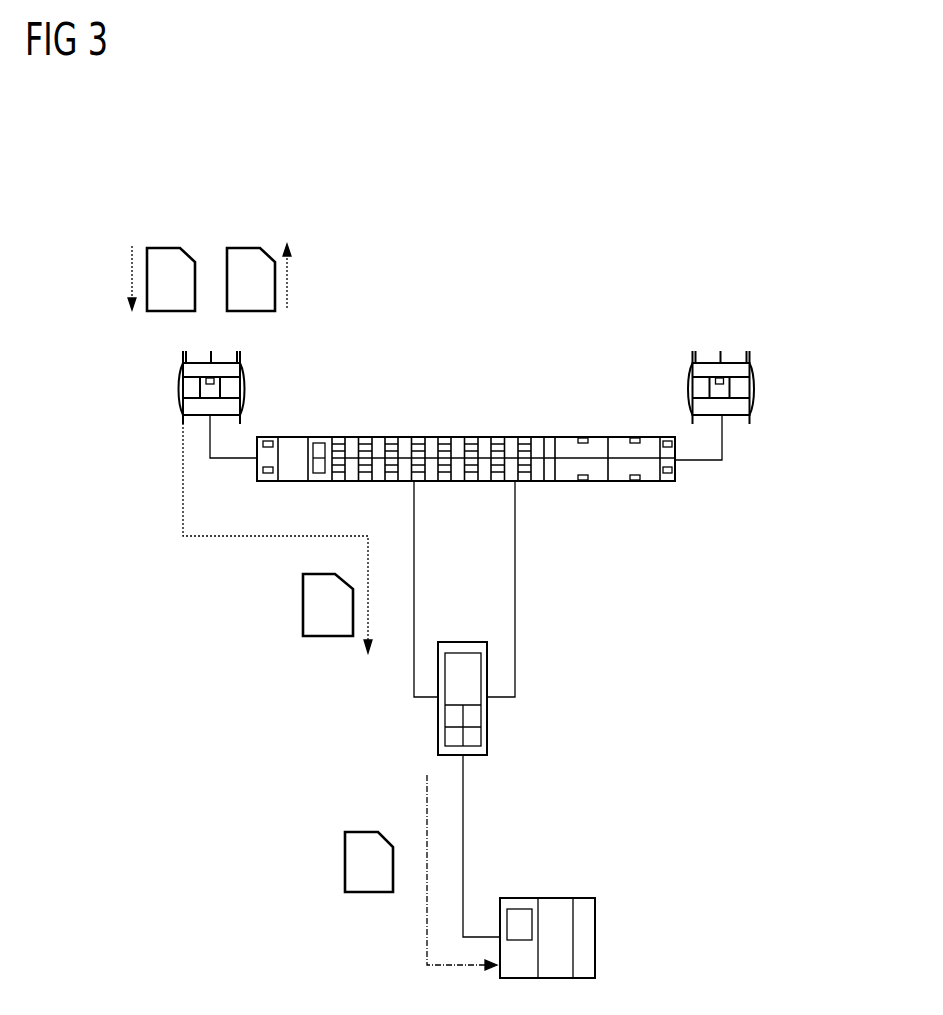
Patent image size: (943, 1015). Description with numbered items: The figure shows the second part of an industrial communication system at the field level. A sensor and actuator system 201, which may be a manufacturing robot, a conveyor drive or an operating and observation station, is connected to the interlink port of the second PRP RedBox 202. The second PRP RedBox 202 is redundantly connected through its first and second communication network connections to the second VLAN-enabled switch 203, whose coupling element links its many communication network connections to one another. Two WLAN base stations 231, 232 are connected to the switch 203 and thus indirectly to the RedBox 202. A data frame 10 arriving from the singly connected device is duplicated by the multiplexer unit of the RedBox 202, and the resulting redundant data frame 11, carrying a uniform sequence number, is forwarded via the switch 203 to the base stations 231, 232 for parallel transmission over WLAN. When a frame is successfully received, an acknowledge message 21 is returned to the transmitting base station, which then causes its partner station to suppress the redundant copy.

The data frame 10 is at (372, 893).
The redundant data frame 11 is at (162, 248).
The acknowledge message 21 is at (243, 248).
The sensor and actuator system 201 is at (595, 942).
The second PRP RedBox 202 is at (487, 729).
The second VLAN-enabled switch 203 is at (556, 437).
The WLAN base station 231 is at (243, 387).
The WLAN base station 232 is at (755, 386).